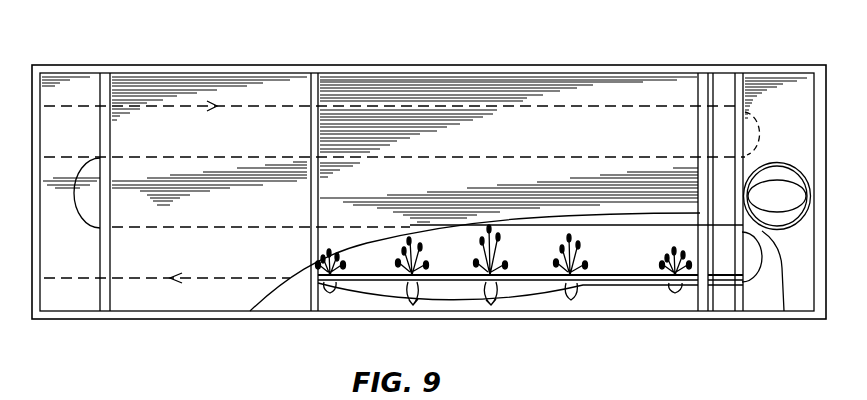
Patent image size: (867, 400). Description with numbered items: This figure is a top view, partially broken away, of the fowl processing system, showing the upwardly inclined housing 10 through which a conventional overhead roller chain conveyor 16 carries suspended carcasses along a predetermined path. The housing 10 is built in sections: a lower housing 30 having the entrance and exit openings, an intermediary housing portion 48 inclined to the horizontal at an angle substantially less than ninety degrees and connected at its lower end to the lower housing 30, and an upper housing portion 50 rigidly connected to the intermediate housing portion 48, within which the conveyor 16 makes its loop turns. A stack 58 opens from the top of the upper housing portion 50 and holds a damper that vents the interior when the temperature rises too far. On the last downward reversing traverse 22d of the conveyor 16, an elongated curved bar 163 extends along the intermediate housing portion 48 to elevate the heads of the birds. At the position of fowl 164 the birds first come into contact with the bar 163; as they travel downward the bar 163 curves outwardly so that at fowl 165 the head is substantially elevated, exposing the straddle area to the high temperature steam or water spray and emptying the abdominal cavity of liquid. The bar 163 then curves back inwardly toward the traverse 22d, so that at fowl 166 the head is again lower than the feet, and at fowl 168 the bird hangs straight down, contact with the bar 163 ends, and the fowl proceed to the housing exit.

The housing 10 is at (336, 54).
The lower housing 30 is at (189, 54).
The intermediary housing portion 48 is at (559, 54).
The upper housing portion 50 is at (774, 54).
The stack 58 is at (780, 162).
The reversing traverse 22d is at (257, 278).
The overhead roller chain conveyor 16 is at (627, 286).
The elongated curved bar 163 is at (537, 302).
The fowl 164 is at (676, 286).
The fowl 165 is at (573, 286).
The fowl 166 is at (492, 305).
The fowl 168 is at (413, 305).